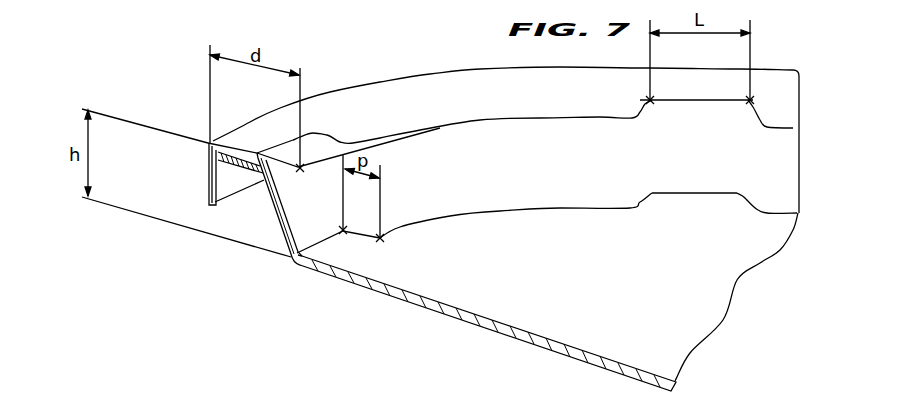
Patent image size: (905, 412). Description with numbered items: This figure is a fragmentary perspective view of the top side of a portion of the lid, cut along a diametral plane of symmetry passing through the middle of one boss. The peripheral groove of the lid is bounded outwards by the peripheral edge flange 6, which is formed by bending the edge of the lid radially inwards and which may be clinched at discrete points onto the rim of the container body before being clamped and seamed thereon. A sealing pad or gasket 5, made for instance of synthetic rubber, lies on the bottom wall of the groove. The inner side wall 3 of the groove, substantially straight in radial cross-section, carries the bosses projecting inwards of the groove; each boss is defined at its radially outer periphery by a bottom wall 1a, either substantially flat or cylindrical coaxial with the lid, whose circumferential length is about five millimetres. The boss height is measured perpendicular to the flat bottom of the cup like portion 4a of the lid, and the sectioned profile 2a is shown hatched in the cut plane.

The bottom wall 1a is at (290, 142).
The channel-shaped profile section 2a is at (245, 172).
The inner side wall 3 is at (457, 192).
The cup like portion 4a is at (560, 318).
The sealing pad or gasket 5 is at (398, 110).
The peripheral edge flange 6 is at (207, 183).